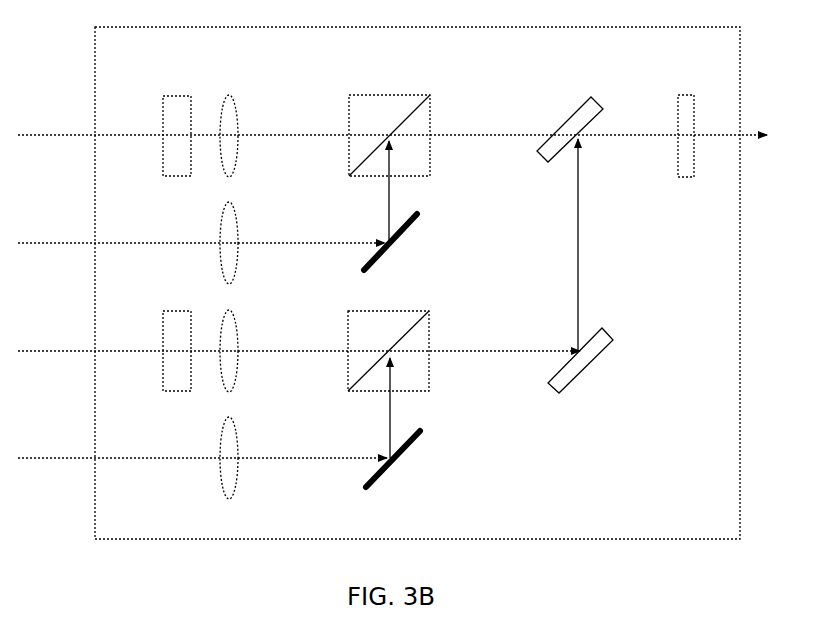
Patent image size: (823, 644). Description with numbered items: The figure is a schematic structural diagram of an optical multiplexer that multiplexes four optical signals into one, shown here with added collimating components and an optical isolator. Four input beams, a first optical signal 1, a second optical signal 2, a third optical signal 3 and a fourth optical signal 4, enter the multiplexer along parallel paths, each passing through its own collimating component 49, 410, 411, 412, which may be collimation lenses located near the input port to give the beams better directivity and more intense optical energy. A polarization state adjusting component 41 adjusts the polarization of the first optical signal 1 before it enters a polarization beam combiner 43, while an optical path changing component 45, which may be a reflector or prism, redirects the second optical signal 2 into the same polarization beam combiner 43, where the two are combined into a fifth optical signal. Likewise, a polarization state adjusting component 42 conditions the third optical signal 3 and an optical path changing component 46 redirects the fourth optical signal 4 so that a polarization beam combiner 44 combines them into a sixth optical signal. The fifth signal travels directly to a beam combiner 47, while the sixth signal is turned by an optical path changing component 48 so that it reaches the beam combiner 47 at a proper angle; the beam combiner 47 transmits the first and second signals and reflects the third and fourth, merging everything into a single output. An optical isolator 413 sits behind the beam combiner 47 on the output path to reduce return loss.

The first optical signal 1 is at (66, 116).
The second optical signal 2 is at (66, 221).
The third optical signal 3 is at (66, 329).
The fourth optical signal 4 is at (66, 436).
The polarization state adjusting component 41 is at (173, 94).
The polarization state adjusting component 42 is at (173, 393).
The polarization beam combiner 43 is at (372, 93).
The polarization beam combiner 44 is at (372, 309).
The optical path changing component 45 is at (398, 243).
The optical path changing component 46 is at (407, 450).
The beam combiner 47 is at (574, 112).
The optical path changing component 48 is at (586, 368).
The collimating component 49 is at (238, 115).
The collimating component 410 is at (238, 222).
The collimating component 411 is at (238, 331).
The collimating component 412 is at (238, 438).
The optical isolator 413 is at (685, 93).